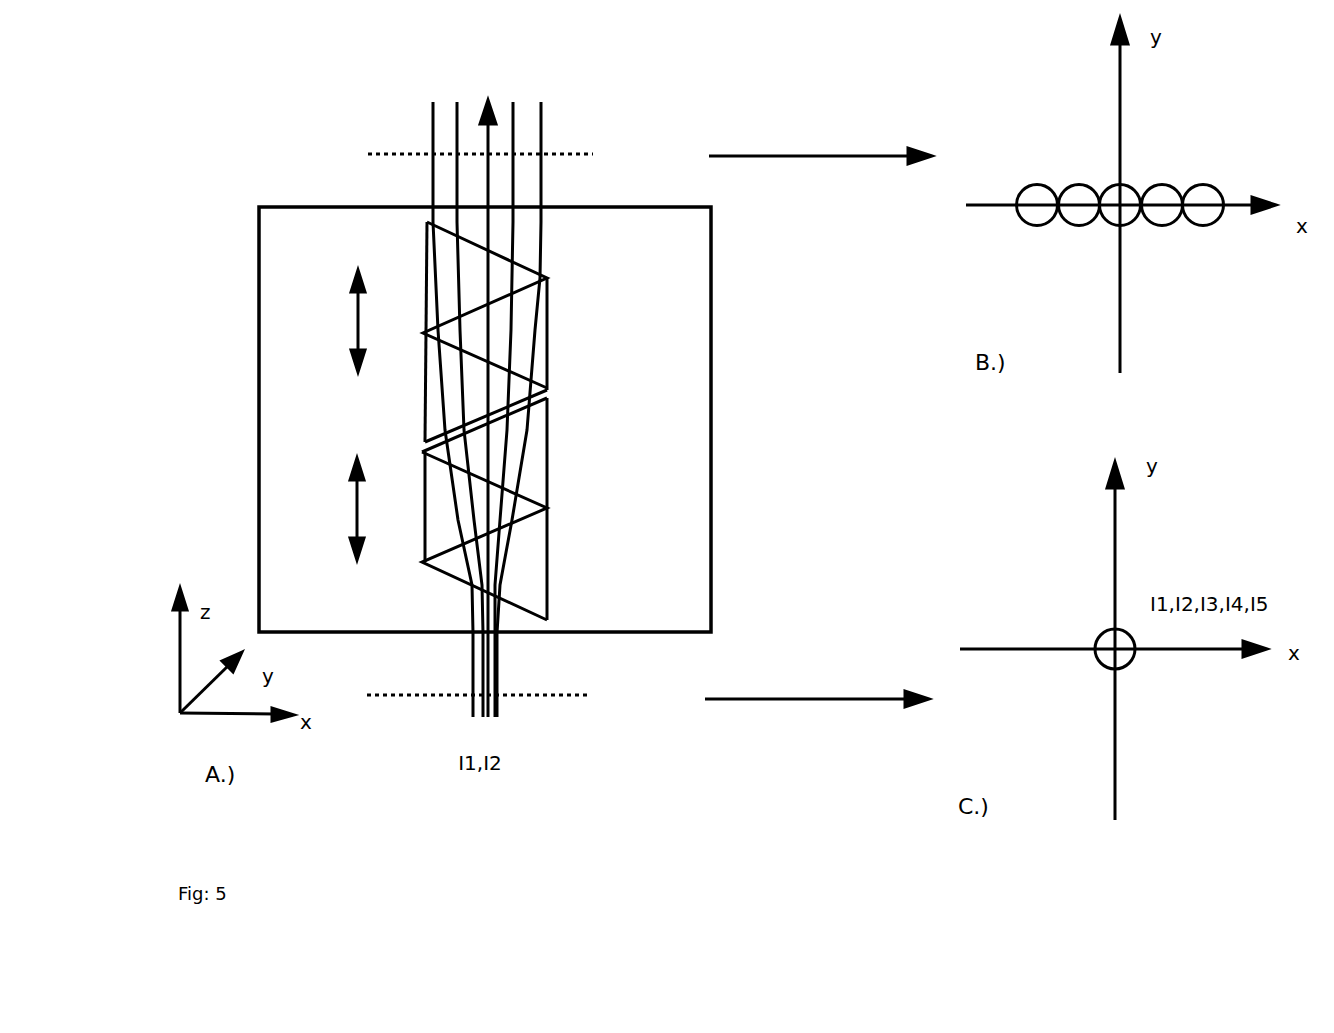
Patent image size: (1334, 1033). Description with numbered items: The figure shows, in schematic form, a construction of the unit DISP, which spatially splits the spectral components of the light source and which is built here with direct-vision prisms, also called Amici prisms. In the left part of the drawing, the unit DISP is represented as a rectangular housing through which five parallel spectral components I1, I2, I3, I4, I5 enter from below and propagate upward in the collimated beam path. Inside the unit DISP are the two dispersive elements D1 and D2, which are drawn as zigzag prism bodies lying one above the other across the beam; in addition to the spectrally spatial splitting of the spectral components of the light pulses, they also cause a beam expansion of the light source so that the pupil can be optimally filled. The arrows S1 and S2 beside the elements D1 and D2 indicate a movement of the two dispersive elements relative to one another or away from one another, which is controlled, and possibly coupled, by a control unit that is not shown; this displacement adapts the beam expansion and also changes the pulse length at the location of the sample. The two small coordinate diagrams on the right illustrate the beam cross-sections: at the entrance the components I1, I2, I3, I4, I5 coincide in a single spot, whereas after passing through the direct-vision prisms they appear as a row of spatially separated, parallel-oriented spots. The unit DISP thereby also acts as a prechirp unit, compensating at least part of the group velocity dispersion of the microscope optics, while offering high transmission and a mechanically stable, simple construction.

The first light beam / image I1 is at (738, 387).
The second light beam / image I2 is at (772, 387).
The third light beam / image I3 is at (807, 387).
The fourth light beam / image I4 is at (839, 387).
The fifth light beam / image I5 is at (860, 387).
The dispersive element D1 is at (517, 509).
The dispersive element D2 is at (518, 332).
The arrow indicating movement S1 is at (337, 509).
The arrow indicating movement S2 is at (337, 321).
The unit for spectrally spatial splitting DISP is at (485, 439).